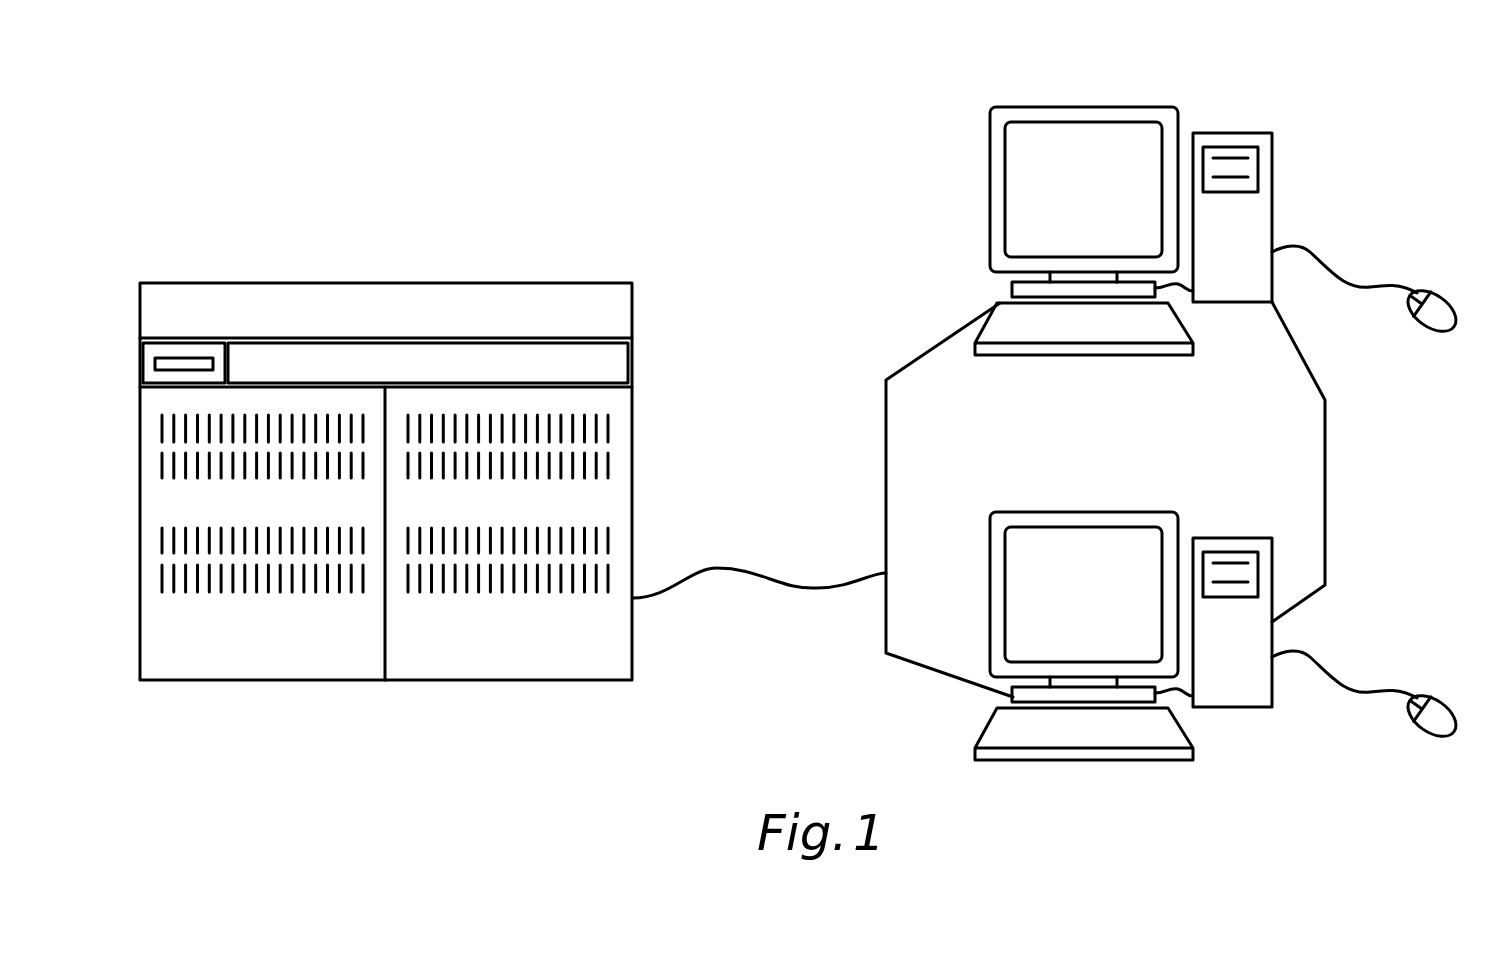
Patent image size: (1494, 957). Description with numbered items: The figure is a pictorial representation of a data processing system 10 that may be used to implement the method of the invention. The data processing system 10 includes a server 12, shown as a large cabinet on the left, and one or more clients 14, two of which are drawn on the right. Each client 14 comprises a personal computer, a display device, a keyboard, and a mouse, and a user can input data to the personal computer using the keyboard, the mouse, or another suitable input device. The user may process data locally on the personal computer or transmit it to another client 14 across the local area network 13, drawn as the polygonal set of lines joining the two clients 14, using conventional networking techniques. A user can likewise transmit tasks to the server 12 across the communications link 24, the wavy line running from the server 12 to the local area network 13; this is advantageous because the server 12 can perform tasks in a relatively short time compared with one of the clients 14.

The data processing system 10 is at (797, 151).
The server 12 is at (633, 447).
The local area network (LAN) 13 is at (1325, 472).
The client 14 is at (1223, 670).
The communications link 24 is at (757, 572).